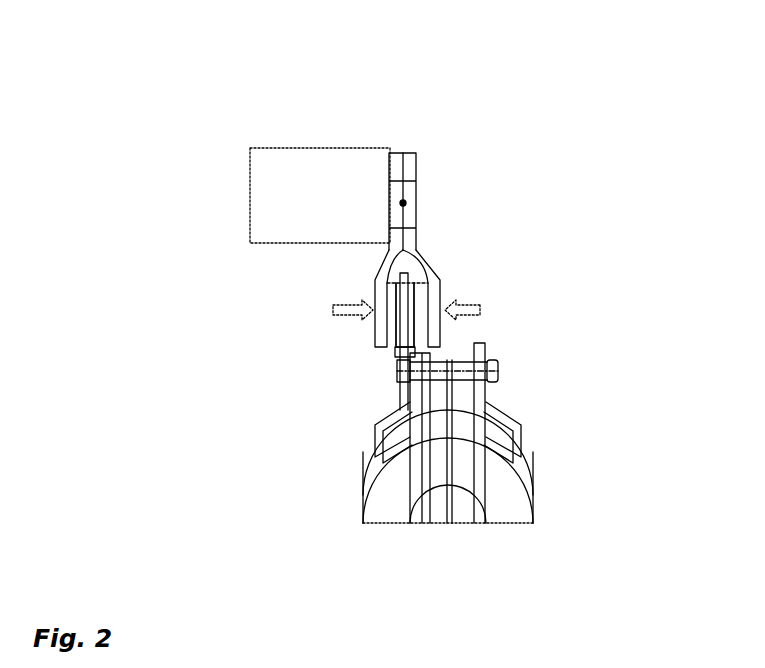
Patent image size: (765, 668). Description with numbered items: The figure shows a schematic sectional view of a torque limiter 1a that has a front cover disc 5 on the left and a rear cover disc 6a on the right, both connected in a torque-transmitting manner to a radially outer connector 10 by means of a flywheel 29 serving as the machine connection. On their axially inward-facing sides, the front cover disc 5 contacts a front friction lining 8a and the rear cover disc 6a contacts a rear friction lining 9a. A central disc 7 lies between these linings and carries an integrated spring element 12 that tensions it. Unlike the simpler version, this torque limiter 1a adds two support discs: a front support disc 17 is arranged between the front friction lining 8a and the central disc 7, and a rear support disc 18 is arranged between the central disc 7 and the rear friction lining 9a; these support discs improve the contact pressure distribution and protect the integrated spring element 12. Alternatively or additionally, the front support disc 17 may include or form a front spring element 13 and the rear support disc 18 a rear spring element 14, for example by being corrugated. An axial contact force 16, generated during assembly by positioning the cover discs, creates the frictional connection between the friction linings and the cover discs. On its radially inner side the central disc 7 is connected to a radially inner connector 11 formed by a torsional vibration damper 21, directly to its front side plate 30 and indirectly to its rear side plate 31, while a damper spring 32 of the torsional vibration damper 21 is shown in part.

The torque limiter 1a is at (163, 51).
The flywheel 29 is at (328, 163).
The front cover disc 5 is at (398, 160).
The rear cover disc 6a is at (413, 160).
The radially outer connector 10 is at (406, 203).
The central disc 7 is at (353, 340).
The integrated spring element 12 is at (402, 327).
The front spring element 13 is at (340, 328).
The front support disc 17 is at (403, 278).
The front friction lining 8a is at (398, 290).
The rear friction lining 9a is at (422, 292).
The rear spring element 14 is at (483, 328).
The rear support disc 18 is at (405, 315).
The axial contact force 16 is at (333, 310).
The torsional vibration damper 21 is at (516, 433).
The radially inner connector 11 is at (516, 433).
The front side plate 30 is at (392, 432).
The rear side plate 31 is at (512, 424).
The damper spring 32 is at (493, 491).